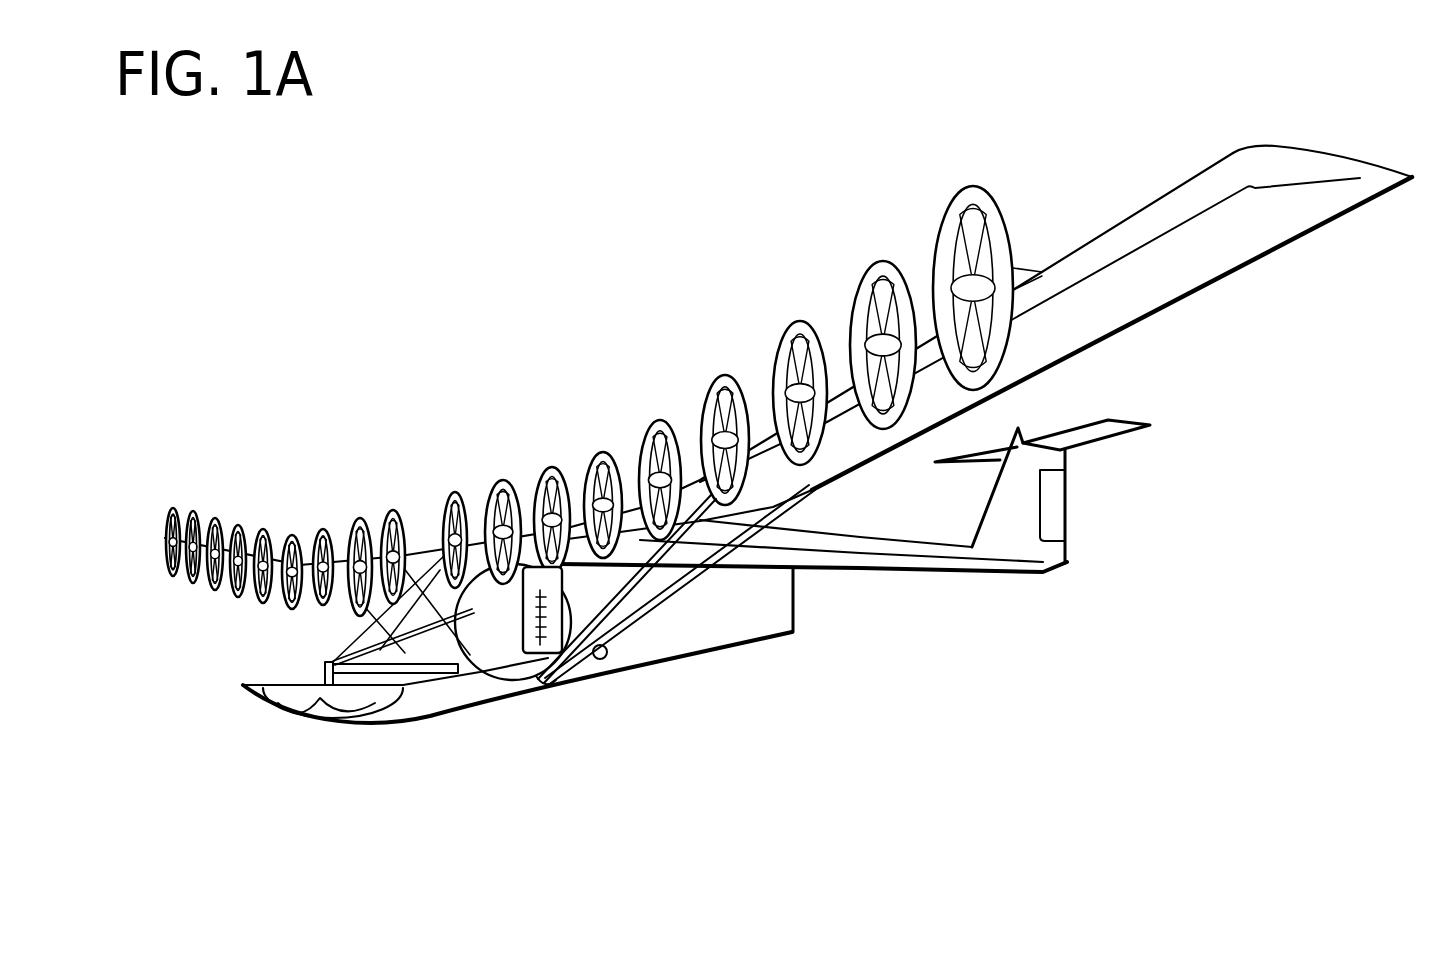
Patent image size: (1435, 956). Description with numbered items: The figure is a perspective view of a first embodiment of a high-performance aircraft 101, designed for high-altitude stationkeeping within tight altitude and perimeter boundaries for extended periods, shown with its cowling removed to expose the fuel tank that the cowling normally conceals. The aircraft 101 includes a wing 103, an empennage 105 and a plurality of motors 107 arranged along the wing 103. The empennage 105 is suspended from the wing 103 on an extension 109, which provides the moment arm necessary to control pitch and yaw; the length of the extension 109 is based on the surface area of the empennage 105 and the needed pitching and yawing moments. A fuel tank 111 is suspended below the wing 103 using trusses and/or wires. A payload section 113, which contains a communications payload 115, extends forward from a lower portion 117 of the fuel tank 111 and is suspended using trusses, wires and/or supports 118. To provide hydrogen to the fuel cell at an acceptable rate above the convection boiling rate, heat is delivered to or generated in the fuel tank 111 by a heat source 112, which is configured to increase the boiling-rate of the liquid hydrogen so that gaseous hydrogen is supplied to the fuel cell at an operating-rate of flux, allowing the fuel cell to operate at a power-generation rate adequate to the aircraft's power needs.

The aircraft 101 is at (436, 359).
The wing 103 is at (1127, 220).
The empennage 105 is at (1028, 523).
The motors 107 is at (693, 437).
The extension 109 is at (960, 573).
The fuel tank 111 is at (473, 608).
The heat source 112 is at (540, 658).
The payload section 113 is at (437, 698).
The communications payload 115 is at (290, 713).
The lower portion of the fuel tank 117 is at (553, 683).
The supports 118 is at (683, 587).